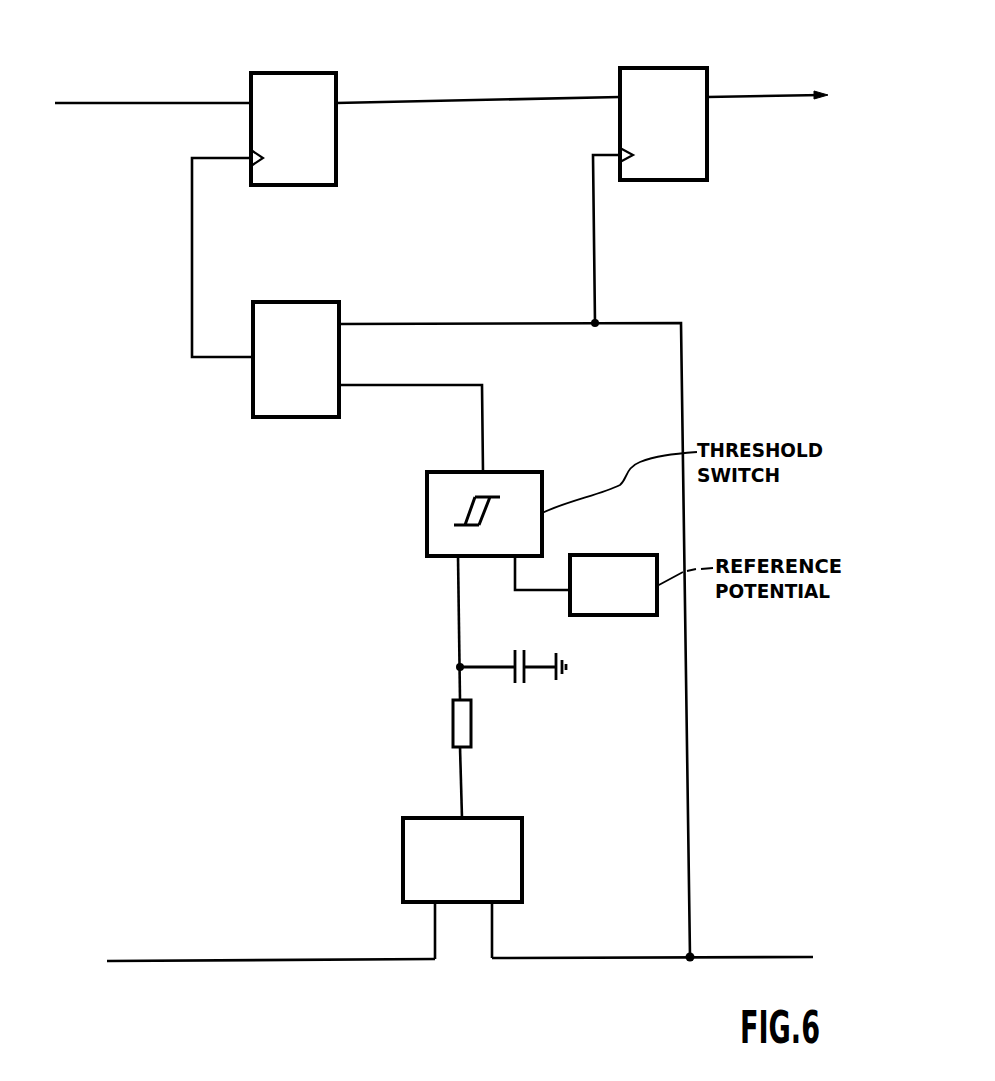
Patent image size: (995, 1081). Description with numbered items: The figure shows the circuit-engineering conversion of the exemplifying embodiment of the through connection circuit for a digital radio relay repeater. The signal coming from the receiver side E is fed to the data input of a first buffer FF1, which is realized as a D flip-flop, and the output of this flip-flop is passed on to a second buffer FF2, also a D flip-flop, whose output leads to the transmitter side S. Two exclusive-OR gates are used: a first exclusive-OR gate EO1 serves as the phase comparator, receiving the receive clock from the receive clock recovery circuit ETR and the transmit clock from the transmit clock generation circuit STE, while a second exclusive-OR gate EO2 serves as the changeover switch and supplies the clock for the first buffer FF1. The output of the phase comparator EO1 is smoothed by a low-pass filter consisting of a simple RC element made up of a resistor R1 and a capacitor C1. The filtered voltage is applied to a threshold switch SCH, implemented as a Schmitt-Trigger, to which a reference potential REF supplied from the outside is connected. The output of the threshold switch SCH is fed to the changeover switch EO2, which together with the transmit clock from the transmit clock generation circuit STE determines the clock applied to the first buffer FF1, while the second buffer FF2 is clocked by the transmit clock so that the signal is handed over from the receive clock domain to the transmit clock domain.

The first buffer FF1 is at (303, 73).
The second buffer FF2 is at (707, 73).
The exclusive-OR gate EO2 is at (300, 302).
The exclusive-OR gate EO1 is at (498, 818).
The threshold switch SCH is at (515, 472).
The reference potential REF is at (612, 555).
The capacitor C1 is at (513, 643).
The resistor R1 is at (442, 723).
The receiver E is at (153, 85).
The transmitter S is at (767, 80).
The receive clock recovery circuit ETR is at (240, 957).
The transmit clock generation circuit STE is at (678, 952).